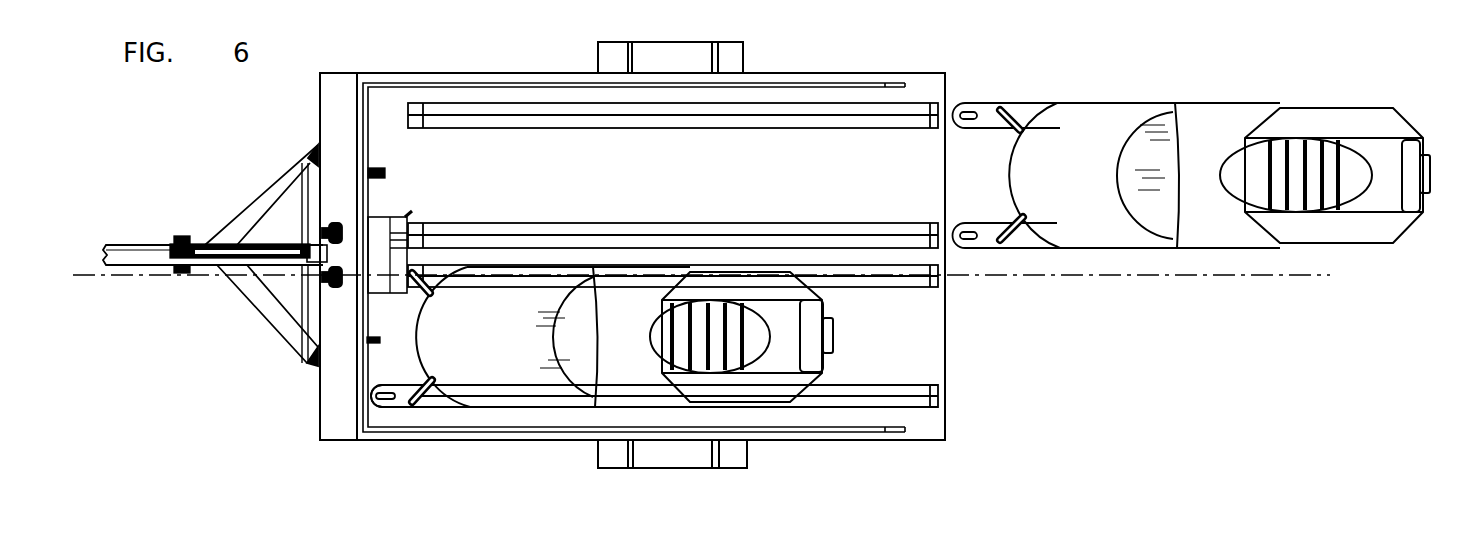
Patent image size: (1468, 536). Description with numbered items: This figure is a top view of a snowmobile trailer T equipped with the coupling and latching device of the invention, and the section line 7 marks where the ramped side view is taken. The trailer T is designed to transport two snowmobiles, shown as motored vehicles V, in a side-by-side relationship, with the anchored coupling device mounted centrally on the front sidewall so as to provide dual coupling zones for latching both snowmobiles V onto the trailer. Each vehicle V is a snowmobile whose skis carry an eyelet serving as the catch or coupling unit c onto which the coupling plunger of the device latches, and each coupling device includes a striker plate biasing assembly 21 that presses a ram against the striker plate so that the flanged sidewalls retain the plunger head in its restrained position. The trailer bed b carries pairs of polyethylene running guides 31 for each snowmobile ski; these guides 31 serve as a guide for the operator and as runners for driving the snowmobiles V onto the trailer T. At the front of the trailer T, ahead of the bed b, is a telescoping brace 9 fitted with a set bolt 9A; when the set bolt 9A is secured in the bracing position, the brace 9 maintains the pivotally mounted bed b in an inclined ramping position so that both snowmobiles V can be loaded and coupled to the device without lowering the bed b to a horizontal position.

The trailer T is at (114, 244).
The telescoping brace 9 is at (210, 244).
The set bolt 9A is at (252, 238).
The striker plate biasing assembly 21 is at (320, 290).
The running guides 31 is at (900, 122).
The motored vehicle V is at (1113, 110).
The trailer bed b is at (935, 358).
The catch or coupling unit c is at (375, 390).
The section line 7- 7 is at (1323, 280).